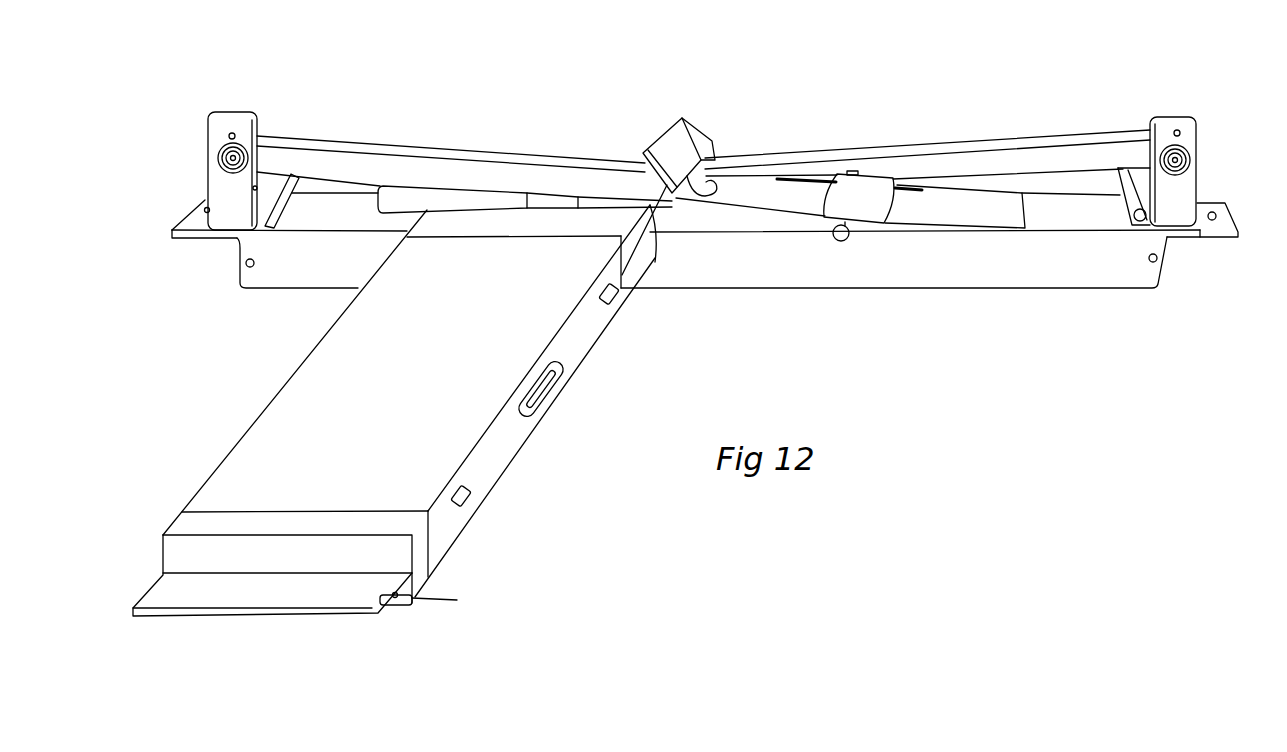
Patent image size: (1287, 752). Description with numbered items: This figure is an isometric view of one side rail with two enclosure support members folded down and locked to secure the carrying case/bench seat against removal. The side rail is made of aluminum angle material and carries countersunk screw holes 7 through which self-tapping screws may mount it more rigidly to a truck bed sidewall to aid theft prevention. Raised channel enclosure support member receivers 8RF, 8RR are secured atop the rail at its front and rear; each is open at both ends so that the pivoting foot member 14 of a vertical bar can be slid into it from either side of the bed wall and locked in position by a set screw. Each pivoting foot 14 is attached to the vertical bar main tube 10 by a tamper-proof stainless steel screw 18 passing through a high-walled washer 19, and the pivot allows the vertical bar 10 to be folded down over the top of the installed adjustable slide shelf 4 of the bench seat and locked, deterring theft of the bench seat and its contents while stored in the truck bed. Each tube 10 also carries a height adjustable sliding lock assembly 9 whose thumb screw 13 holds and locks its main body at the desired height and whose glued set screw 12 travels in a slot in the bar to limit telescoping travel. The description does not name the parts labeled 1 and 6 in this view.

The side rail 1 is at (457, 428).
The adjustable slide shelf 4 is at (655, 262).
The base plate 6 is at (768, 262).
The counter sunk screw holes 7 is at (205, 213).
The enclosure support member receiver 8RF is at (277, 204).
The enclosure support member receiver 8RR is at (1140, 188).
The height adjustable sliding lock assembly 9 is at (872, 193).
The vertical bar main tube 10 is at (473, 167).
The glued set screw 12 is at (851, 170).
The thumb screw 13 is at (846, 243).
The pivoting foot member 14 is at (237, 116).
The tamper-proof stainless steel screw 18 is at (226, 158).
The high-walled washer 19 is at (228, 145).